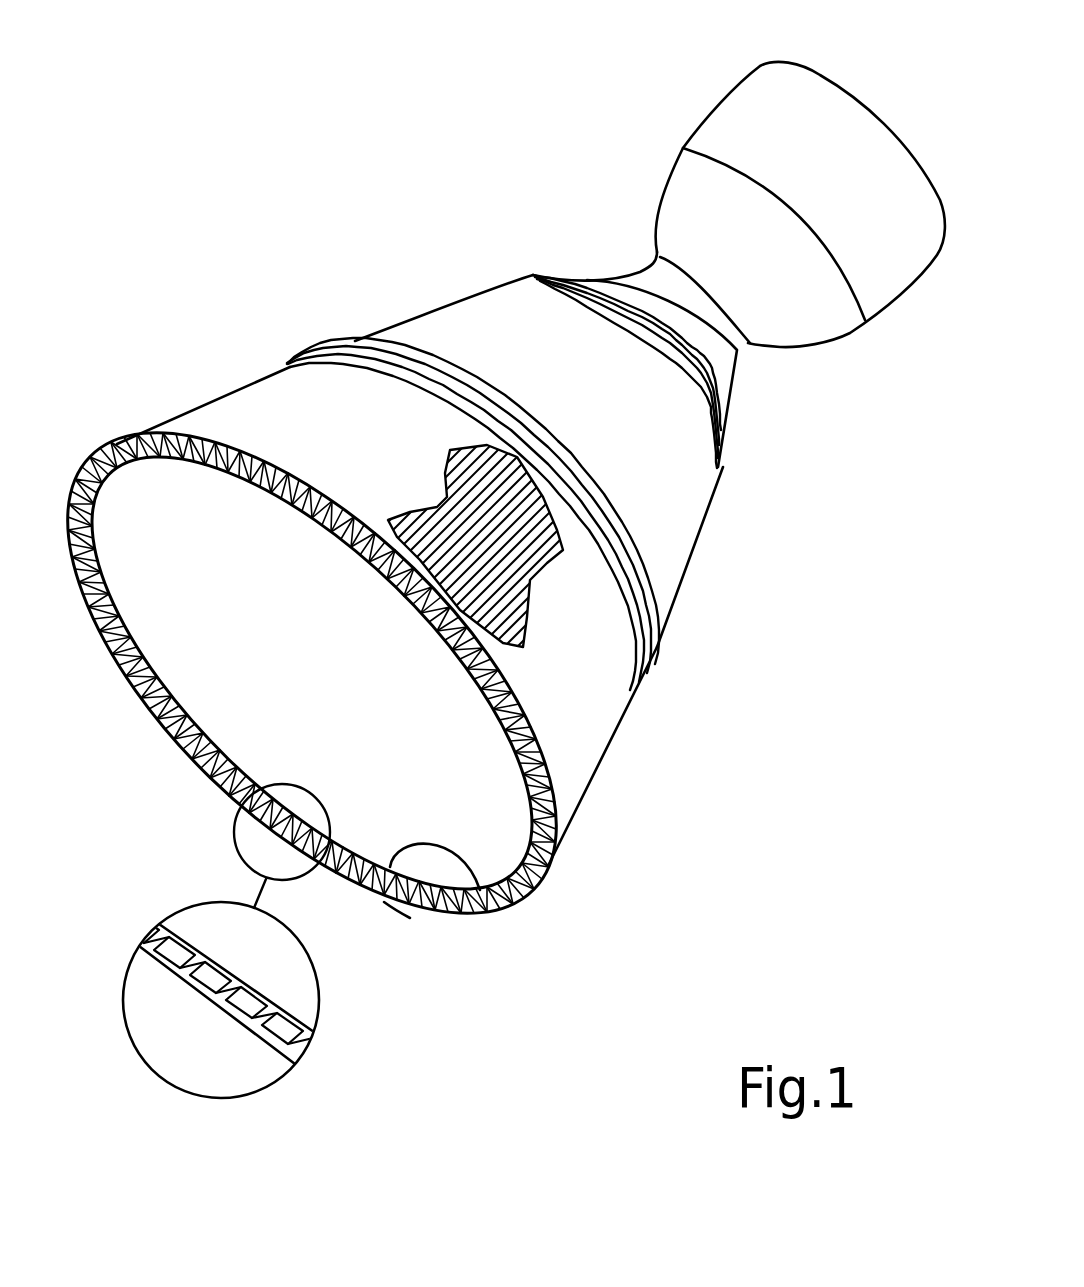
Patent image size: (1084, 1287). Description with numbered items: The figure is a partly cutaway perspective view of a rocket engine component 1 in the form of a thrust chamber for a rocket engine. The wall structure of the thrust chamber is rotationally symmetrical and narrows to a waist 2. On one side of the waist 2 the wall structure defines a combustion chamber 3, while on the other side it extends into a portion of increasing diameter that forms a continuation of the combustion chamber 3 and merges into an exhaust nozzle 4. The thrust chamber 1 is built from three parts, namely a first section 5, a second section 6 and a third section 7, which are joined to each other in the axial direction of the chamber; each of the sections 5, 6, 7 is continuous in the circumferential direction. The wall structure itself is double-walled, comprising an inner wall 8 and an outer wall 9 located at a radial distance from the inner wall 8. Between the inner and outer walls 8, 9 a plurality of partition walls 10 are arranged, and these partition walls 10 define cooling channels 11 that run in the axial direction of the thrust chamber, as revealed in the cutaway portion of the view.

The rocket engine component 1 is at (337, 155).
The waist 2 is at (767, 380).
The combustion chamber 3 is at (680, 77).
The exhaust nozzle 4 is at (708, 585).
The first section 5 is at (583, 772).
The second section 6 is at (697, 515).
The third section 7 is at (830, 320).
The inner wall 8 is at (483, 890).
The outer wall 9 is at (405, 903).
The partition walls 10 is at (170, 977).
The cooling channels 11 is at (217, 1003).